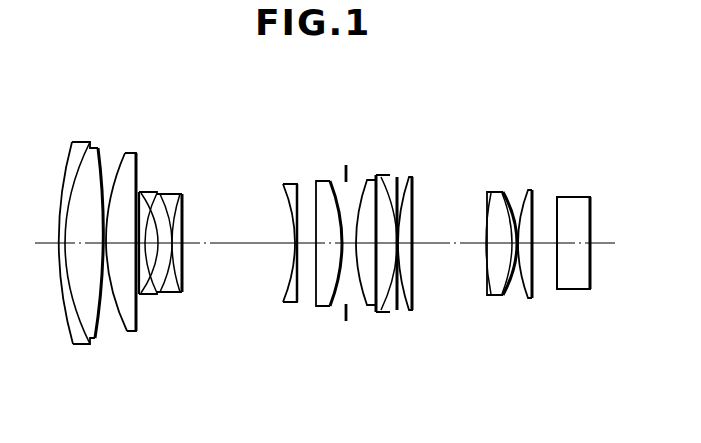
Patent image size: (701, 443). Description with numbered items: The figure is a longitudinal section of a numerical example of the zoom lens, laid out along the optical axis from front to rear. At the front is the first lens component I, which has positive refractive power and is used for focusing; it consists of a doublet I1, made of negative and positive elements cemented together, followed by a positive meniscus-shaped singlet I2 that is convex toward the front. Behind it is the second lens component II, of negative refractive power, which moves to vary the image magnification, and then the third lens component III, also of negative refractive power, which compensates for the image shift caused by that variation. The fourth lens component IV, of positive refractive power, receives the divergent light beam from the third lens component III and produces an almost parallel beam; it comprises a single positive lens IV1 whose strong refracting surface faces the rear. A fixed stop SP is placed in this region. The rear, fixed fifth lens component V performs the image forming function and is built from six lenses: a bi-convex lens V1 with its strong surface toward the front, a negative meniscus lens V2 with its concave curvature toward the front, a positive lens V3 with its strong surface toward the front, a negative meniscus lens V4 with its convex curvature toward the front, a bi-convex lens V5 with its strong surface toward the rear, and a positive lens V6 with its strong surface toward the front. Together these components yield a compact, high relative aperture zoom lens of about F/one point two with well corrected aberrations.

The first lens component I is at (96, 257).
The doublet I1 is at (108, 132).
The positive meniscus-shaped singlet I2 is at (127, 153).
The second lens component II is at (185, 335).
The third lens component III is at (302, 337).
The fourth lens component IV is at (318, 264).
The positive lens IV1 is at (320, 183).
The stop SP is at (345, 166).
The fifth lens component V is at (456, 265).
The bi-convex lens V1 is at (370, 178).
The negative meniscus lens V2 is at (383, 175).
The positive lens V3 is at (410, 176).
The negative meniscus lens V4 is at (495, 192).
The bi-convex lens V5 is at (507, 207).
The positive lens V6 is at (530, 194).